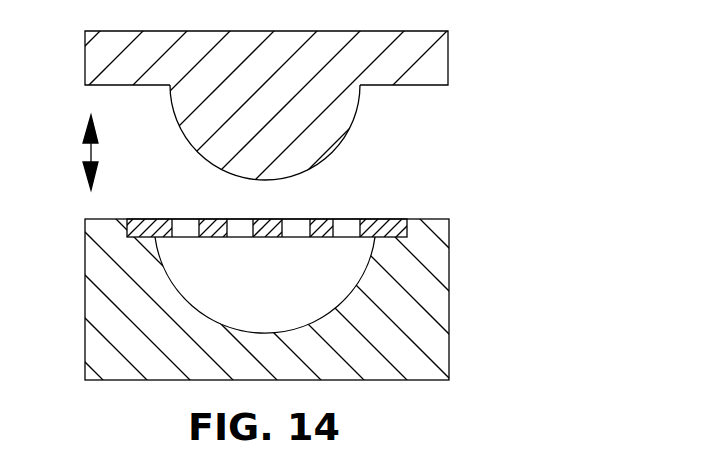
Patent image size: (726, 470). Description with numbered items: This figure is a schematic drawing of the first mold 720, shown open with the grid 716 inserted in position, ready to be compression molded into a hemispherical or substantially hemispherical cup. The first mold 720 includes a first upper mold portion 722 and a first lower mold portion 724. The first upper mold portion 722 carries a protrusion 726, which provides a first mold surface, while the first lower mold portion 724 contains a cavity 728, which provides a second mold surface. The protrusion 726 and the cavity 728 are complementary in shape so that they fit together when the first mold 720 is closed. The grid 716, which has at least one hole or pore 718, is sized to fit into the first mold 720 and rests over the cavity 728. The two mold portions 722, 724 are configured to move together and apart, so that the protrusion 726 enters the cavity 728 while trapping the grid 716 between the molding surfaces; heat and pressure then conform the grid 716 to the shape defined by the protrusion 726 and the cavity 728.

The first mold 720 is at (293, 205).
The first upper mold portion 722 is at (448, 56).
The first lower mold portion 724 is at (449, 316).
The protrusion 726 is at (342, 141).
The grid 716 is at (375, 248).
The hole or pore 718 is at (180, 219).
The cavity 728 is at (283, 297).